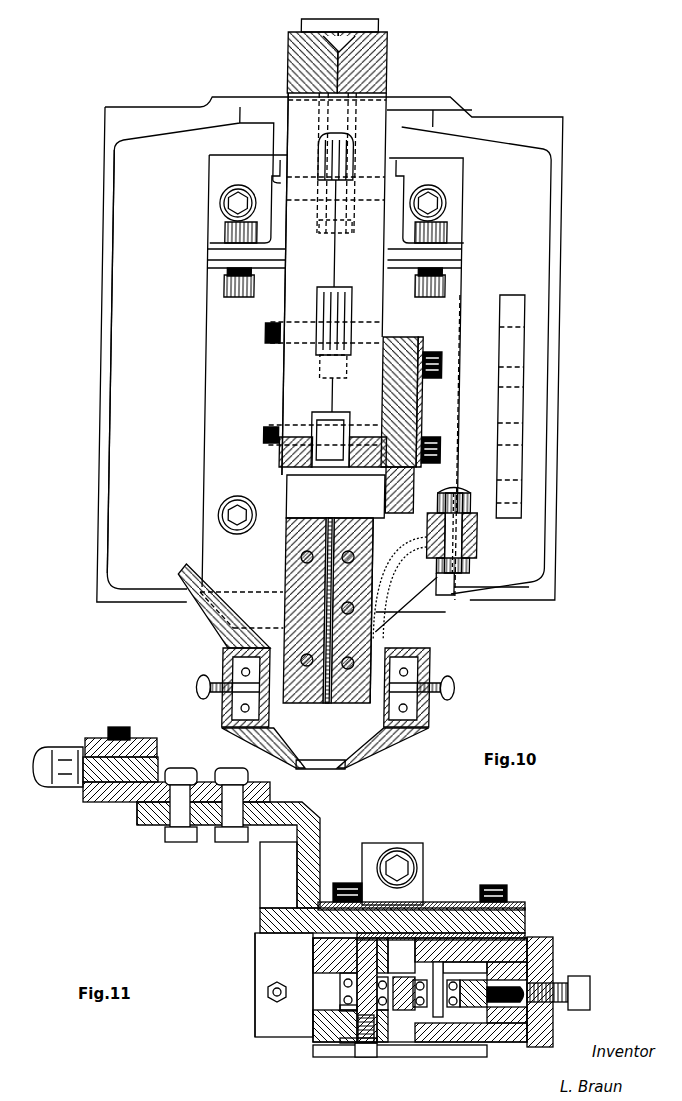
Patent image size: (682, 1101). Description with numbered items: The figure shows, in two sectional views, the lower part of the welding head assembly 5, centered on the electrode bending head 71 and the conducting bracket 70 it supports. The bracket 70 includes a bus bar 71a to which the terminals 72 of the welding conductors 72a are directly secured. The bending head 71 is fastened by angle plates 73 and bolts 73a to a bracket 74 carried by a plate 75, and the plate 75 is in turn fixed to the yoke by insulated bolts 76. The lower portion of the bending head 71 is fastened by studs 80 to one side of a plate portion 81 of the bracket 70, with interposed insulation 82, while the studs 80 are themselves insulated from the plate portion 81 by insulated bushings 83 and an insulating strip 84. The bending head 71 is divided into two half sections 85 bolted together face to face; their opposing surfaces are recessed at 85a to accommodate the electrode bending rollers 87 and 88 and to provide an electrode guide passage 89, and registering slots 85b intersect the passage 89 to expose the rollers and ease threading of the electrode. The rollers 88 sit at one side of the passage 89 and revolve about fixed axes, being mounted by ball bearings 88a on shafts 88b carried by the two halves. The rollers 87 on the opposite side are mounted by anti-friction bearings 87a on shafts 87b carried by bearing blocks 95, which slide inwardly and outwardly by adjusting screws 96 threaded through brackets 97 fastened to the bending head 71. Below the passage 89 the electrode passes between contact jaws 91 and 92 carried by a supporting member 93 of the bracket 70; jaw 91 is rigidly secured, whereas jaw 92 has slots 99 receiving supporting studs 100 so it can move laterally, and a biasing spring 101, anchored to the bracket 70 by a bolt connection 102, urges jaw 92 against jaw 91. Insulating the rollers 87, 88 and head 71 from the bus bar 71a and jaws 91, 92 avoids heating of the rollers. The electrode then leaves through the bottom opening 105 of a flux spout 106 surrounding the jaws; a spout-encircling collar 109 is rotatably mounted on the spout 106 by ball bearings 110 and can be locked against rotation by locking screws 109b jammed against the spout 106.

In FIG. 10, the welding head assembly 5 is at (162, 616).
In FIG. 11, the welding head assembly 5 is at (232, 932).
In FIG. 10, the conducting bracket 70 is at (499, 518).
In FIG. 11, the conducting bracket 70 is at (262, 912).
In FIG. 10, the electrode bending head 71 is at (283, 378).
In FIG. 11, the electrode bending head 71 is at (308, 998).
In FIG. 11, the bus bar 71a is at (137, 826).
In FIG. 11, the terminals 72 is at (163, 772).
In FIG. 11, the welding conductors 72a is at (42, 765).
In FIG. 10, the angle plates 73 is at (216, 250).
In FIG. 10, the bolts 73a is at (239, 297).
In FIG. 10, the bracket 74 is at (271, 325).
In FIG. 10, the plate 75 is at (208, 368).
In FIG. 10, the bolts 76 is at (229, 203).
In FIG. 10, the studs 80 is at (443, 362).
In FIG. 11, the studs 80 is at (343, 883).
In FIG. 10, the plate portion 81 is at (390, 488).
In FIG. 11, the plate portion 81 is at (528, 920).
In FIG. 10, the insulation 82 is at (384, 393).
In FIG. 11, the insulation 82 is at (522, 936).
In FIG. 10, the insulated bushings 83 is at (397, 340).
In FIG. 10, the insulating strip 84 is at (424, 402).
In FIG. 11, the insulating strip 84 is at (462, 902).
In FIG. 10, the half sections 85 is at (331, 255).
In FIG. 11, the half sections 85 is at (318, 945).
In FIG. 11, the recesses 85a is at (512, 910).
In FIG. 11, the registering slots 85b is at (400, 935).
In FIG. 11, the electrode bending rollers 87 is at (400, 976).
In FIG. 11, the anti-friction bearings 87a is at (388, 1042).
In FIG. 11, the shafts 87b is at (438, 1042).
In FIG. 11, the electrode bending rollers 88 is at (379, 1012).
In FIG. 11, the ball bearings 88a is at (345, 1012).
In FIG. 11, the shafts 88b is at (340, 1041).
In FIG. 10, the electrode guide passage 89 is at (324, 467).
In FIG. 10, the contact jaw 91 is at (289, 545).
In FIG. 10, the contact jaw 92 is at (377, 530).
In FIG. 10, the supporting member 93 is at (289, 493).
In FIG. 11, the bearing blocks 95 is at (474, 1042).
In FIG. 11, the adjusting screws 96 is at (580, 978).
In FIG. 11, the brackets 97 is at (555, 960).
In FIG. 10, the slots 99 is at (357, 553).
In FIG. 10, the supporting studs 100 is at (351, 551).
In FIG. 10, the biasing spring 101 is at (389, 572).
In FIG. 10, the bolt connection 102 is at (479, 566).
In FIG. 10, the bottom opening 105 is at (342, 766).
In FIG. 10, the flux spout 106 is at (232, 640).
In FIG. 10, the spout-encircling collar 109 is at (228, 658).
In FIG. 10, the locking screws 109b is at (202, 687).
In FIG. 10, the ball bearings 110 is at (252, 716).